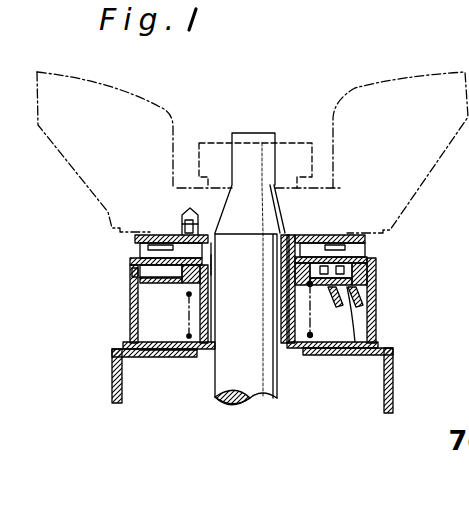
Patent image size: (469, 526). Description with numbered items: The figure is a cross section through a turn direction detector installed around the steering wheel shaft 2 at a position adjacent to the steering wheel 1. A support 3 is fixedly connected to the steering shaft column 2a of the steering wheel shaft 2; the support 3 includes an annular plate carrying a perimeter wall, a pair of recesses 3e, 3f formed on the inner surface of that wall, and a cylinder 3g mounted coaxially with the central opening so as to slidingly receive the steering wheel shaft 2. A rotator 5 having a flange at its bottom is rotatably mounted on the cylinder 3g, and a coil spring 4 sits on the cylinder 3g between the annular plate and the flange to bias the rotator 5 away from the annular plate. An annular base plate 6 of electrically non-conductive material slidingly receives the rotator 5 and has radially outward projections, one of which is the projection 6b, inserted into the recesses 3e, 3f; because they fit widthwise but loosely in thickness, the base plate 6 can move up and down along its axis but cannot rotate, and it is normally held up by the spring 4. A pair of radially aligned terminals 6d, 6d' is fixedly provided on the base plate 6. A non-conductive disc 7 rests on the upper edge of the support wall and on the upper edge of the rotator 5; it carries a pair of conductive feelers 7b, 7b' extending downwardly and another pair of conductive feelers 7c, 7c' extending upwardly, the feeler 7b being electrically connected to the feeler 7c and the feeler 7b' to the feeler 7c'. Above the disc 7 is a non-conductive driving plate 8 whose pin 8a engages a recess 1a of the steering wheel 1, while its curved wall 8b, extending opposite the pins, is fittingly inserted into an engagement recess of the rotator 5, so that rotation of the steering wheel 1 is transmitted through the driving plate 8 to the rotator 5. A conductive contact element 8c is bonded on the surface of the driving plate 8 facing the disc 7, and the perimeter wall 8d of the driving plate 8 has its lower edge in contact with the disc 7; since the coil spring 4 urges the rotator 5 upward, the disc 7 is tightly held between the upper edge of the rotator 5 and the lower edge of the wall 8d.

The steering wheel 1 is at (408, 115).
The recesses 1a is at (182, 195).
The steering wheel shaft 2 is at (250, 382).
The steering shaft column 2a is at (110, 388).
The support 3 is at (378, 323).
The recess 3e is at (135, 270).
The recess 3f is at (378, 265).
The cylinder 3g is at (298, 352).
The coil spring 4 is at (184, 355).
The rotator 5 is at (152, 355).
The annular base plate 6 is at (135, 307).
The projection 6b is at (135, 287).
The terminal 6d is at (340, 348).
The terminal 6d' is at (374, 378).
The disc 7 is at (135, 260).
The feeler 7b is at (393, 305).
The feeler 7b' is at (386, 256).
The feeler 7c is at (346, 207).
The feeler 7c' is at (378, 236).
The driving plate 8 is at (153, 238).
The pin 8a is at (182, 222).
The curved wall 8b is at (217, 267).
The contact element 8c is at (150, 250).
The wall 8d is at (380, 238).